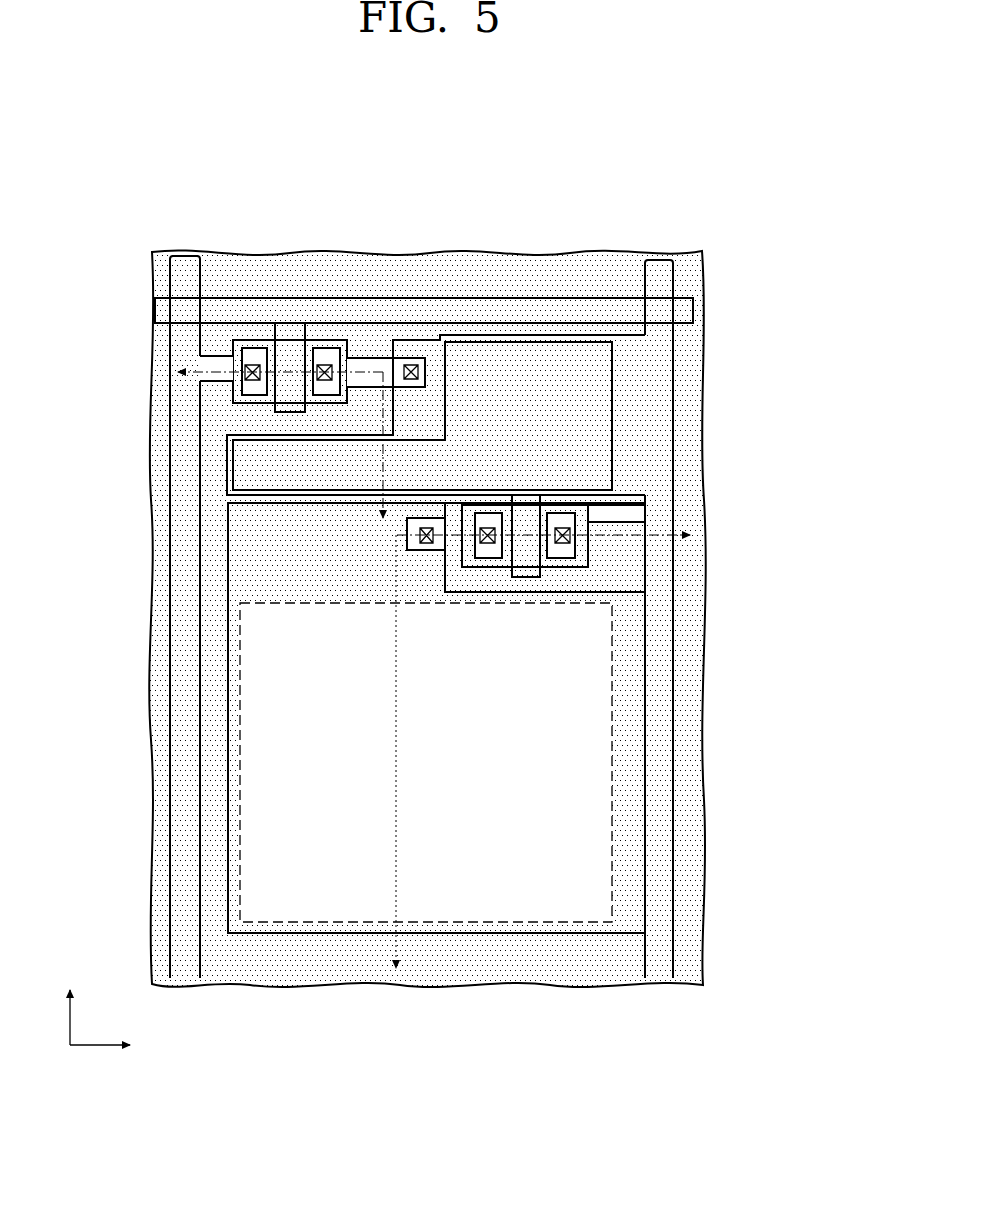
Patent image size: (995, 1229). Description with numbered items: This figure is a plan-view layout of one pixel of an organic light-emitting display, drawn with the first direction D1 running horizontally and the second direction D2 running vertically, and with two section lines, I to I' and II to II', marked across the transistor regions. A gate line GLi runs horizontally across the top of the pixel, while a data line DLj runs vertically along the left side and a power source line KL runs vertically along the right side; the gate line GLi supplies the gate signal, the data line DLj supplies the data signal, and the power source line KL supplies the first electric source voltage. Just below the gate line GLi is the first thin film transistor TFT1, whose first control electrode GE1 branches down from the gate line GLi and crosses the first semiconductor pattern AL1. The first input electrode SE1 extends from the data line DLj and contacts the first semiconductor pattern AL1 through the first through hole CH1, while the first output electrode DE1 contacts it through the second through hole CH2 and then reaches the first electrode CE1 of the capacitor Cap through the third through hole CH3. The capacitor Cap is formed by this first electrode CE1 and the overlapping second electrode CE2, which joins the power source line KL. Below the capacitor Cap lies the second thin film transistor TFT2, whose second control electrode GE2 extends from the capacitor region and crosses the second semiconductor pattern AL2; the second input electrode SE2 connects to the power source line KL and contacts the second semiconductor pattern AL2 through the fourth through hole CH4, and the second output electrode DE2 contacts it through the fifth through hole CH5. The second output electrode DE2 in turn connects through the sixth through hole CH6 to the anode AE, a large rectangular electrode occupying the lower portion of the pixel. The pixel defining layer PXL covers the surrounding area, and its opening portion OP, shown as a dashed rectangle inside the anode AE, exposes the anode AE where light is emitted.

The pixel defining layer PXL is at (692, 933).
The data line DLj is at (186, 264).
The gate line GLi is at (160, 312).
The power source line KL is at (661, 266).
The first control electrode GE1 is at (266, 327).
The first thin film transistor TFT1 is at (314, 332).
The first semiconductor pattern AL1 is at (334, 338).
The first input electrode SE1 is at (240, 396).
The first output electrode DE1 is at (326, 396).
The first through hole CH1 is at (250, 364).
The second through hole CH2 is at (348, 408).
The third through hole CH3 is at (430, 372).
The fourth through hole CH4 is at (566, 559).
The fifth through hole CH5 is at (480, 548).
The sixth through hole CH6 is at (427, 550).
The first electrode of the capacitor CE1 is at (421, 335).
The second electrode of the capacitor CE2 is at (490, 335).
The capacitor Cap is at (542, 191).
The second control electrode GE2 is at (535, 592).
The second thin film transistor TFT2 is at (612, 506).
The second semiconductor pattern AL2 is at (525, 505).
The second input electrode SE2 is at (562, 514).
The second output electrode DE2 is at (488, 504).
The opening portion OP is at (596, 712).
The anode AE is at (628, 836).
The section line I is at (280, 358).
The section line I' is at (383, 462).
The section line II is at (548, 522).
The section line II' is at (412, 756).
The first direction D1 is at (114, 1045).
The second direction D2 is at (69, 1005).